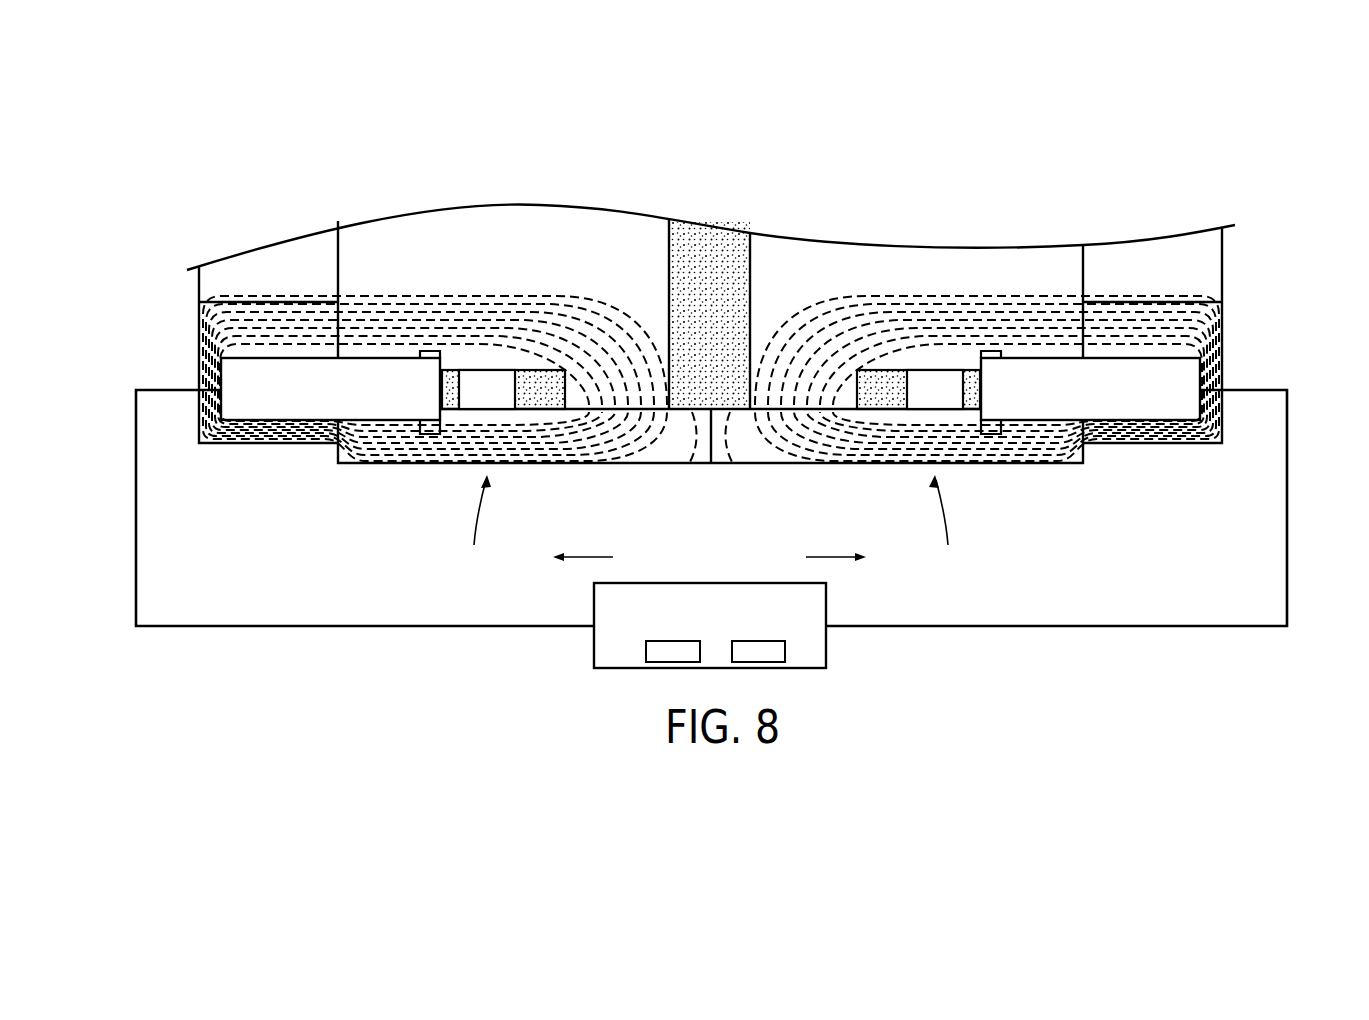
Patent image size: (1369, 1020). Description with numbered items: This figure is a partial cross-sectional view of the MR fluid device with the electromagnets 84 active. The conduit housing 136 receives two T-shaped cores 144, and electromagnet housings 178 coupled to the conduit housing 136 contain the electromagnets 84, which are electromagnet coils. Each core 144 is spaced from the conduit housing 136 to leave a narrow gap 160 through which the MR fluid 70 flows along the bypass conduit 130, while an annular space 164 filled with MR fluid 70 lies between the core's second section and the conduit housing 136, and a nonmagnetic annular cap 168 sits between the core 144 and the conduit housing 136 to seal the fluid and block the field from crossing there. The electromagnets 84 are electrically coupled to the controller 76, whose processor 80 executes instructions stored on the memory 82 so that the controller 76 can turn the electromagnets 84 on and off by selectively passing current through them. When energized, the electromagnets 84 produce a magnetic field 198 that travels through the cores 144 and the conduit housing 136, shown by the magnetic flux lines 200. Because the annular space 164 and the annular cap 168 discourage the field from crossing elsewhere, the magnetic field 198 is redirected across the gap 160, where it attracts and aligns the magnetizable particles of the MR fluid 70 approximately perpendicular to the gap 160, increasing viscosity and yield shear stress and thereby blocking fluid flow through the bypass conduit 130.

The MR fluid 70 is at (710, 257).
The controller 76 is at (710, 617).
The processor 80 is at (662, 662).
The memory 82 is at (757, 662).
The electromagnet 84 is at (710, 438).
The bypass conduit 130 is at (1316, 566).
The conduit housing 136 is at (693, 450).
The core 144 is at (556, 244).
The gap 160 is at (616, 409).
The annular space 164 is at (507, 406).
The annular cap 168 is at (387, 397).
The electromagnet housing 178 is at (278, 258).
The magnetic field 198 is at (709, 529).
The magnetic flux lines 200 is at (215, 321).